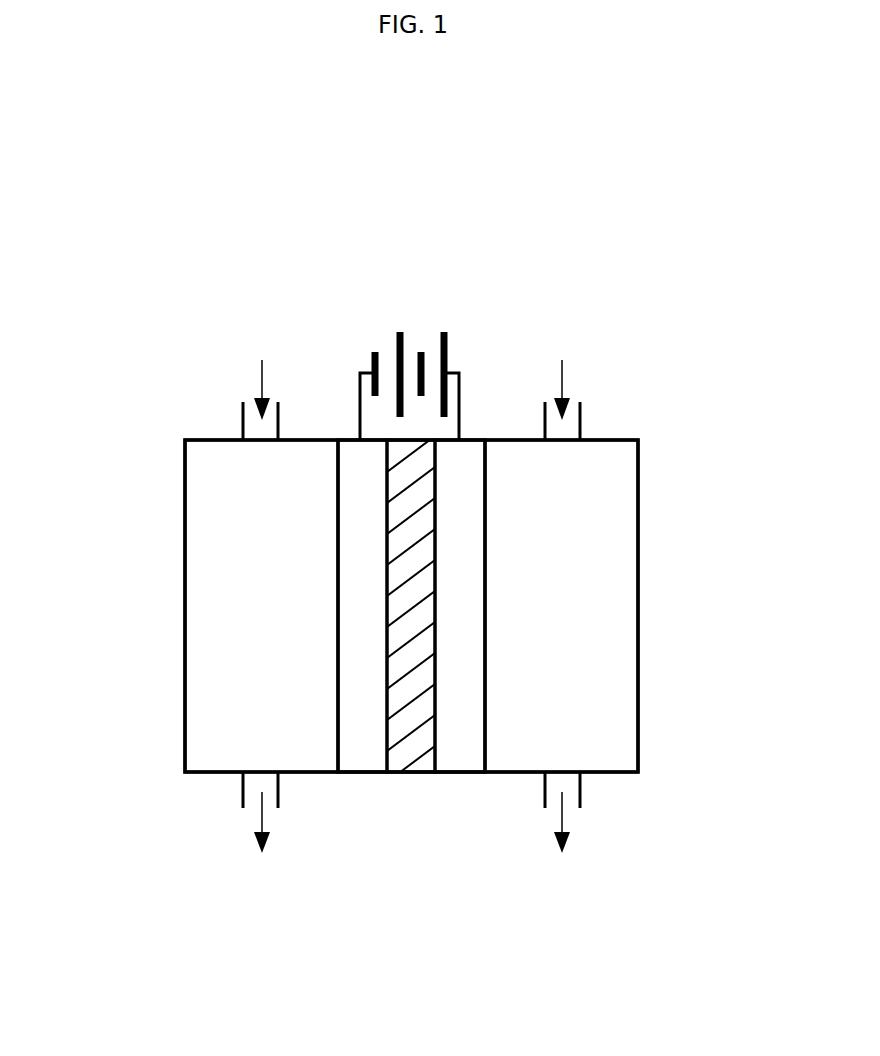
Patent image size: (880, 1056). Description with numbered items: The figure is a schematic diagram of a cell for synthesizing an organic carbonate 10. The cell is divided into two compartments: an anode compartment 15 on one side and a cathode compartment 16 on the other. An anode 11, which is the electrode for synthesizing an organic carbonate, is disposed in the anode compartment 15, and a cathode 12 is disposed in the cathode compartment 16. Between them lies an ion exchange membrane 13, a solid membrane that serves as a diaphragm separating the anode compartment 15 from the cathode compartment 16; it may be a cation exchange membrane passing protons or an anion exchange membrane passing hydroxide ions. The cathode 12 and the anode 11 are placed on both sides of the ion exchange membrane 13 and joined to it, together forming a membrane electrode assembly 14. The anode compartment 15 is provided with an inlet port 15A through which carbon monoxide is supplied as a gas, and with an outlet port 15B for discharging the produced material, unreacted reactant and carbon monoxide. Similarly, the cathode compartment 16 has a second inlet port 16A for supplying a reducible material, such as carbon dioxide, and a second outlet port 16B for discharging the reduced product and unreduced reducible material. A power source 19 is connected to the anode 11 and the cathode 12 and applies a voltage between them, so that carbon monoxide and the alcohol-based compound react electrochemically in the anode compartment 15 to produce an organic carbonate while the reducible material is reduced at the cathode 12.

The cell for synthesizing an organic carbonate 10 is at (520, 297).
The anode 11 is at (460, 760).
The cathode 12 is at (362, 760).
The ion exchange membrane 13 is at (415, 760).
The membrane electrode assembly 14 is at (517, 917).
The anode compartment 15 is at (607, 700).
The inlet port 15A is at (580, 417).
The outlet port 15B is at (580, 798).
The cathode compartment 16 is at (217, 702).
The second inlet port 16A is at (243, 420).
The second outlet port 16B is at (243, 798).
The power source 19 is at (448, 345).